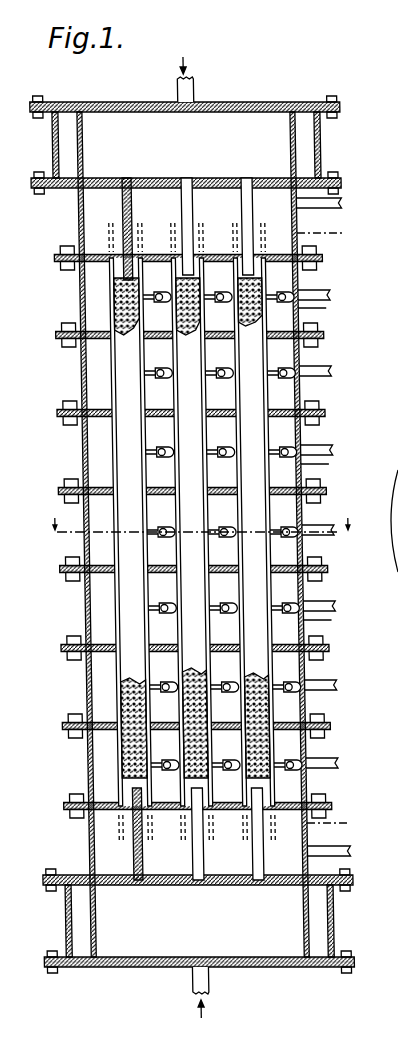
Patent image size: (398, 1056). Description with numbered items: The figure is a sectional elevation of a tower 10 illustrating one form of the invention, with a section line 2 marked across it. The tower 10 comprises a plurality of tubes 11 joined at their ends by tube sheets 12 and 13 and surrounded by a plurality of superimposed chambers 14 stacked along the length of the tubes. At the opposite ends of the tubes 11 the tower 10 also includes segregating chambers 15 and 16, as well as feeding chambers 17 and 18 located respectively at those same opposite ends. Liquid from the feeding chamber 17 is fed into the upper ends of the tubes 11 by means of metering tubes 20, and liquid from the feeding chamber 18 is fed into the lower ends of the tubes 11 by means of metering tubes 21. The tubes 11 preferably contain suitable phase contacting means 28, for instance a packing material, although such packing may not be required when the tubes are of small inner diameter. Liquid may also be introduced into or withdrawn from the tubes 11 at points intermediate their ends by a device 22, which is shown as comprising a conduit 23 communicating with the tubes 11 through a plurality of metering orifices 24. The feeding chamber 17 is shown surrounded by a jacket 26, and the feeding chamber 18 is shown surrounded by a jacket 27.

The section line 2- 2 is at (200, 532).
The tower 10 is at (322, 569).
The tubes 11 is at (133, 514).
The tube sheet 12 is at (272, 254).
The tube sheet 13 is at (274, 812).
The superimposed chambers 14 is at (90, 308).
The segregating chamber 15 is at (91, 209).
The segregating chamber 16 is at (100, 840).
The feeding chamber 17 is at (207, 116).
The feeding chamber 18 is at (134, 952).
The metering tubes 20 is at (129, 203).
The metering tubes 21 is at (178, 861).
The device 22 is at (324, 294).
The conduit 23 is at (325, 469).
The metering orifices 24 is at (144, 300).
The jacket 26 is at (305, 152).
The jacket 27 is at (316, 916).
The phase contacting means 28 is at (112, 289).